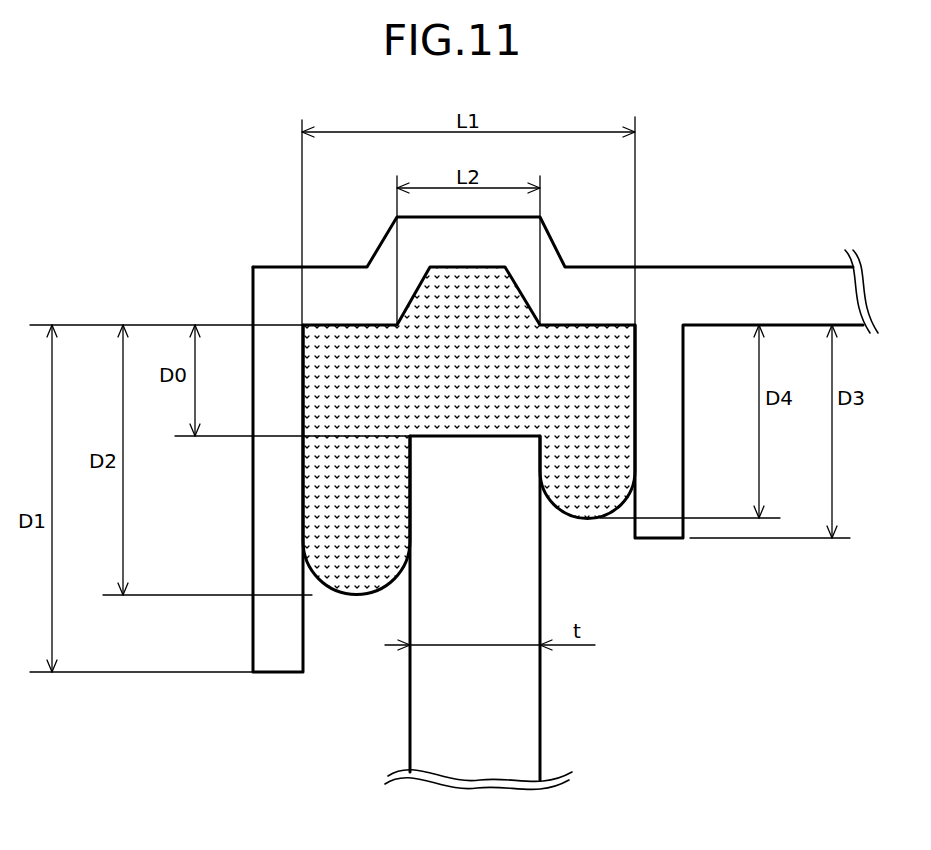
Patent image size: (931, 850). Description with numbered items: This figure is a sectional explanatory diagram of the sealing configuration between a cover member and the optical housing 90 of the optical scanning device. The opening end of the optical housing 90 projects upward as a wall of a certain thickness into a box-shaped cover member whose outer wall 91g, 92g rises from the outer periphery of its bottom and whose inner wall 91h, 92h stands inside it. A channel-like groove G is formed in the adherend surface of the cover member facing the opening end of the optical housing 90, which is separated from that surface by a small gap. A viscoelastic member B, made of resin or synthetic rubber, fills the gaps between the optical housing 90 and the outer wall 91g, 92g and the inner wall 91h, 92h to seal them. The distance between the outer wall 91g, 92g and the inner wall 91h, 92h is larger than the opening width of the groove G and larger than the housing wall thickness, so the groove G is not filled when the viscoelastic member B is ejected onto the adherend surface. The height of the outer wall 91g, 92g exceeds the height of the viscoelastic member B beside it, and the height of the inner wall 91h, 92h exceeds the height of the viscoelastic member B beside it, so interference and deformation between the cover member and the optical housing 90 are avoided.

The optical housing 90 is at (522, 700).
The outer wall 91g is at (215, 469).
The outer wall 92g is at (270, 549).
The inner wall 91h is at (749, 431).
The inner wall 92h is at (667, 440).
The groove G is at (504, 286).
The viscoelastic member B is at (580, 500).